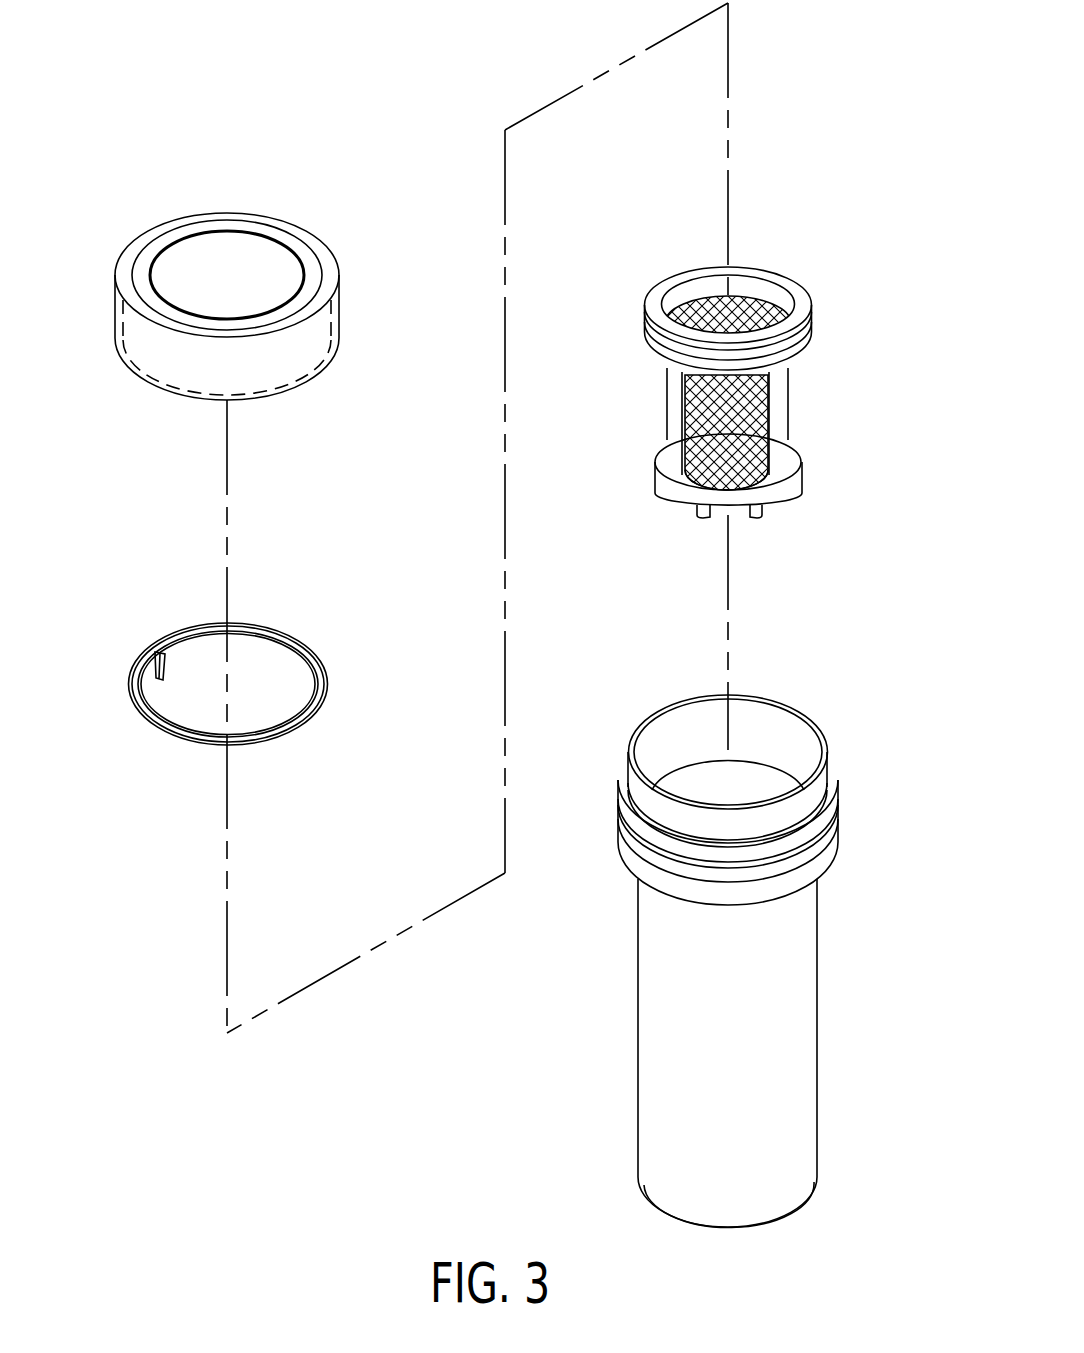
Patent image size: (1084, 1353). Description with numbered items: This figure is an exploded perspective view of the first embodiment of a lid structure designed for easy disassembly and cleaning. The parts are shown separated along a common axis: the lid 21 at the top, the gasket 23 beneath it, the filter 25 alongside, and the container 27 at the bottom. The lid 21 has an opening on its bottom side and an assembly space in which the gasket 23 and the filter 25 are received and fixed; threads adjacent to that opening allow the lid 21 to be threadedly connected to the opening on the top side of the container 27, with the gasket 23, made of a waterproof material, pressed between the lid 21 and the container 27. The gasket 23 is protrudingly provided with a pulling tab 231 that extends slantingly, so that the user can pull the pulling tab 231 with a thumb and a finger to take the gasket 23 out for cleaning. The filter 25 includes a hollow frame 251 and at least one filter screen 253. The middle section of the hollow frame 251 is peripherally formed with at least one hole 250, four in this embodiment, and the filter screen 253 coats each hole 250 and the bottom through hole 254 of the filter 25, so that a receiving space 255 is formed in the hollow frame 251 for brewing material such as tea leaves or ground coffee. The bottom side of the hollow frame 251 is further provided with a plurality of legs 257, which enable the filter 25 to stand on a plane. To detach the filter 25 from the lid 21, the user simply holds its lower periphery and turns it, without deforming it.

The lid 21 is at (297, 358).
The gasket 23 is at (163, 727).
The pulling tab 231 is at (159, 652).
The filter 25 is at (732, 368).
The hole 250 is at (800, 410).
The hollow frame 251 is at (708, 505).
The filter screen 253 is at (688, 395).
The bottom through hole 254 is at (718, 495).
The receiving space 255 is at (763, 298).
The legs 257 is at (778, 505).
The container 27 is at (678, 1035).